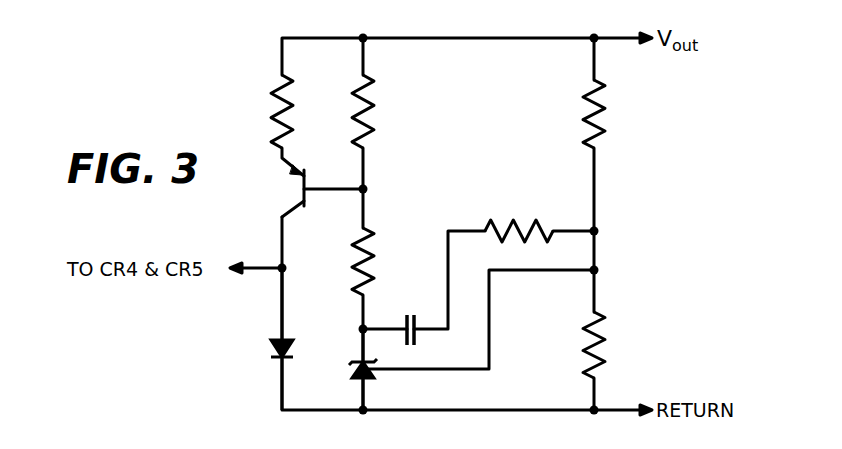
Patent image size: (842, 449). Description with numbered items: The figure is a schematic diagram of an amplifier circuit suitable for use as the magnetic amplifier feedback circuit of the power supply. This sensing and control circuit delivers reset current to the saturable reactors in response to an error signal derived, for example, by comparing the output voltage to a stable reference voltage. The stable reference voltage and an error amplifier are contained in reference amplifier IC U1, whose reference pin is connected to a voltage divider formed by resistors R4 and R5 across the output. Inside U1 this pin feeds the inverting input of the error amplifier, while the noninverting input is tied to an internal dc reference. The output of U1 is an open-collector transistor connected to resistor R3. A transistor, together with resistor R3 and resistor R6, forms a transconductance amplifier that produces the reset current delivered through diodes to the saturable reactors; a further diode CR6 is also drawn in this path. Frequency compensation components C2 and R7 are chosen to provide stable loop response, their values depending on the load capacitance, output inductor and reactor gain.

The resistor R6 is at (265, 111).
The resistor R3 is at (364, 185).
The resistor R4 is at (611, 114).
The resistor R5 is at (611, 345).
The frequency compensation resistor R7 is at (519, 218).
The frequency compensation capacitor C2 is at (410, 316).
The reference amplifier IC U1 is at (348, 369).
The diode CR6 is at (256, 339).